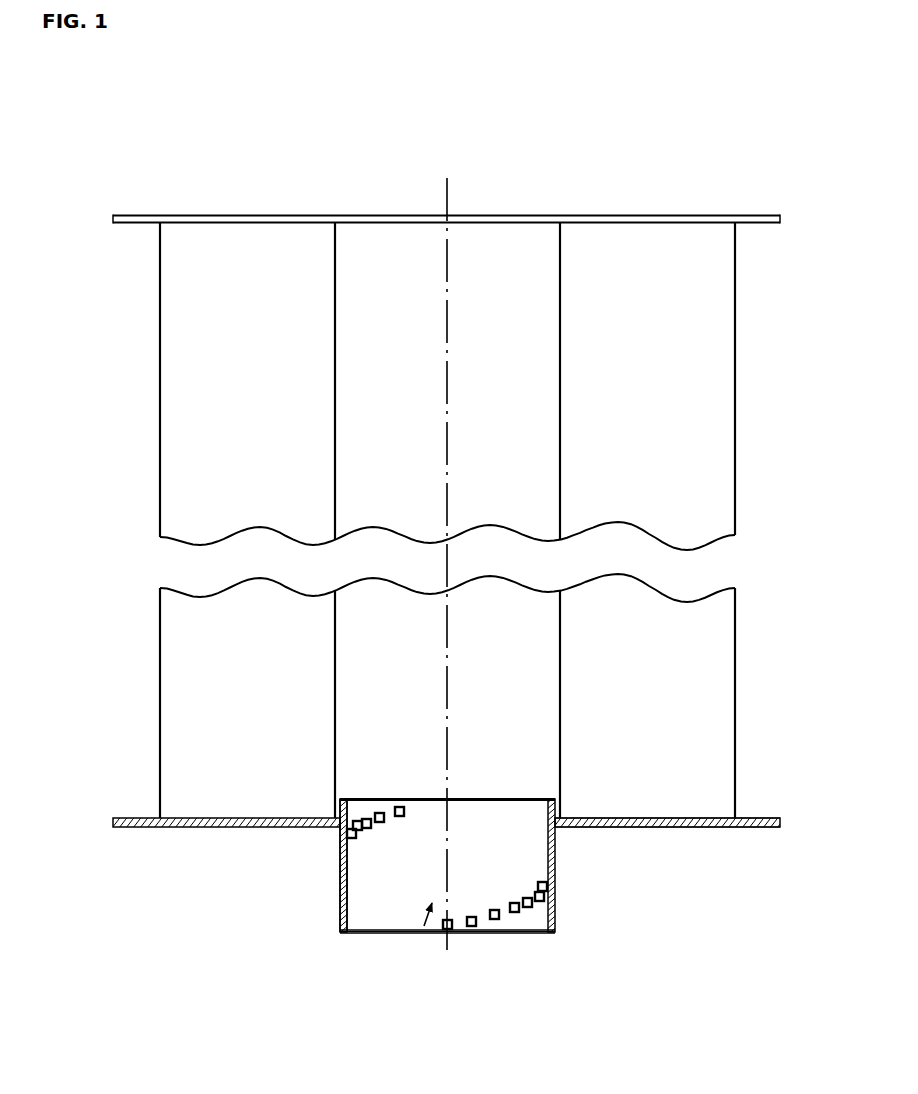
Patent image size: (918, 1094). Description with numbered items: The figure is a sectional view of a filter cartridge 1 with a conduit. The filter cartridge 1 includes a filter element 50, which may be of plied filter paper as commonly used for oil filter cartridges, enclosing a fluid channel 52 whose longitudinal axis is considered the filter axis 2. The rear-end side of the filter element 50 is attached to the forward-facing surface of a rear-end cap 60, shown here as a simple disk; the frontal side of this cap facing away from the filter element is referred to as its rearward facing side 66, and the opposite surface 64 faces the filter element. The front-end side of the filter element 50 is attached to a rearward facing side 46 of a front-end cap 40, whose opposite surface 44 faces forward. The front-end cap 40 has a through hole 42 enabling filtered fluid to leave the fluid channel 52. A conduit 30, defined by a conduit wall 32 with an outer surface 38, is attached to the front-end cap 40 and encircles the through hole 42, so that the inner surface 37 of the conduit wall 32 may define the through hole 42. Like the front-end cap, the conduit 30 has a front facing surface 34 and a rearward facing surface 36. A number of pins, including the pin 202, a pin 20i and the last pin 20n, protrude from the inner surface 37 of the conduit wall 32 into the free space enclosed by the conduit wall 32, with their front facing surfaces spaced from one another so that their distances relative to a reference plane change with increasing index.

The filter cartridge 1 is at (100, 175).
The filter axis 2 is at (450, 187).
The pin 20i is at (355, 799).
The pin 20n is at (405, 799).
The pin 202 is at (467, 933).
The conduit 30 is at (560, 915).
The conduit wall 32 is at (340, 890).
The front facing surface 34 is at (535, 933).
The rearward facing surface 36 is at (491, 798).
The inner surface 37 is at (367, 868).
The outer surface 38 is at (340, 862).
The front-end cap 40 is at (700, 827).
The through hole 42 is at (424, 933).
The lower surface of lower plate 44 is at (648, 827).
The rearward facing side 46 is at (648, 818).
The filter element 50 is at (703, 363).
The fluid channel 52 is at (390, 250).
The rear-end cap 60 is at (752, 215).
The lower surface of upper plate 64 is at (650, 224).
The rearward facing side 66 is at (648, 215).